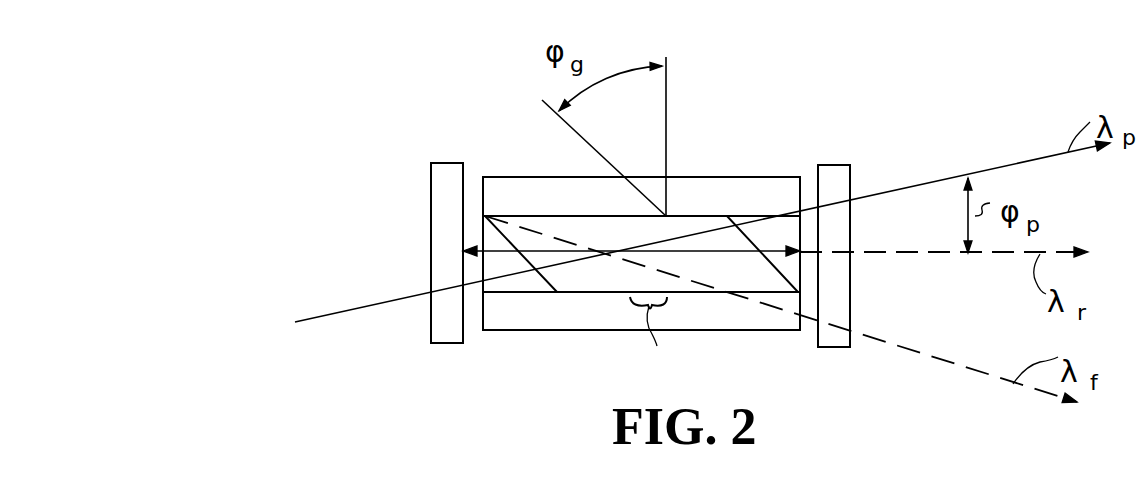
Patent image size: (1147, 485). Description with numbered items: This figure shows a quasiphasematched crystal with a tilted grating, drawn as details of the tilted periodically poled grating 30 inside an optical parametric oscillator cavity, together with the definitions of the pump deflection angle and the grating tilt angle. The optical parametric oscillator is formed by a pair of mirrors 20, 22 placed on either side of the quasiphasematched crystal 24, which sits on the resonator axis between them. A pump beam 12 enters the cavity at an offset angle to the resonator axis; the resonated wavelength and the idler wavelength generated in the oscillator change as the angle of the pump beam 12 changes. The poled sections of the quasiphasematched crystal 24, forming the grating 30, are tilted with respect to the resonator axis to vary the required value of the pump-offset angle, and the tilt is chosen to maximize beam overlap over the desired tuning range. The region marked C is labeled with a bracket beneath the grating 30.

The pump beam 12 is at (338, 311).
The mirror 20 is at (430, 192).
The mirror 22 is at (836, 165).
The quasiphasematched crystal 24 is at (718, 176).
The tilted periodically poled grating 30 is at (557, 292).
The cavity region C is at (656, 334).